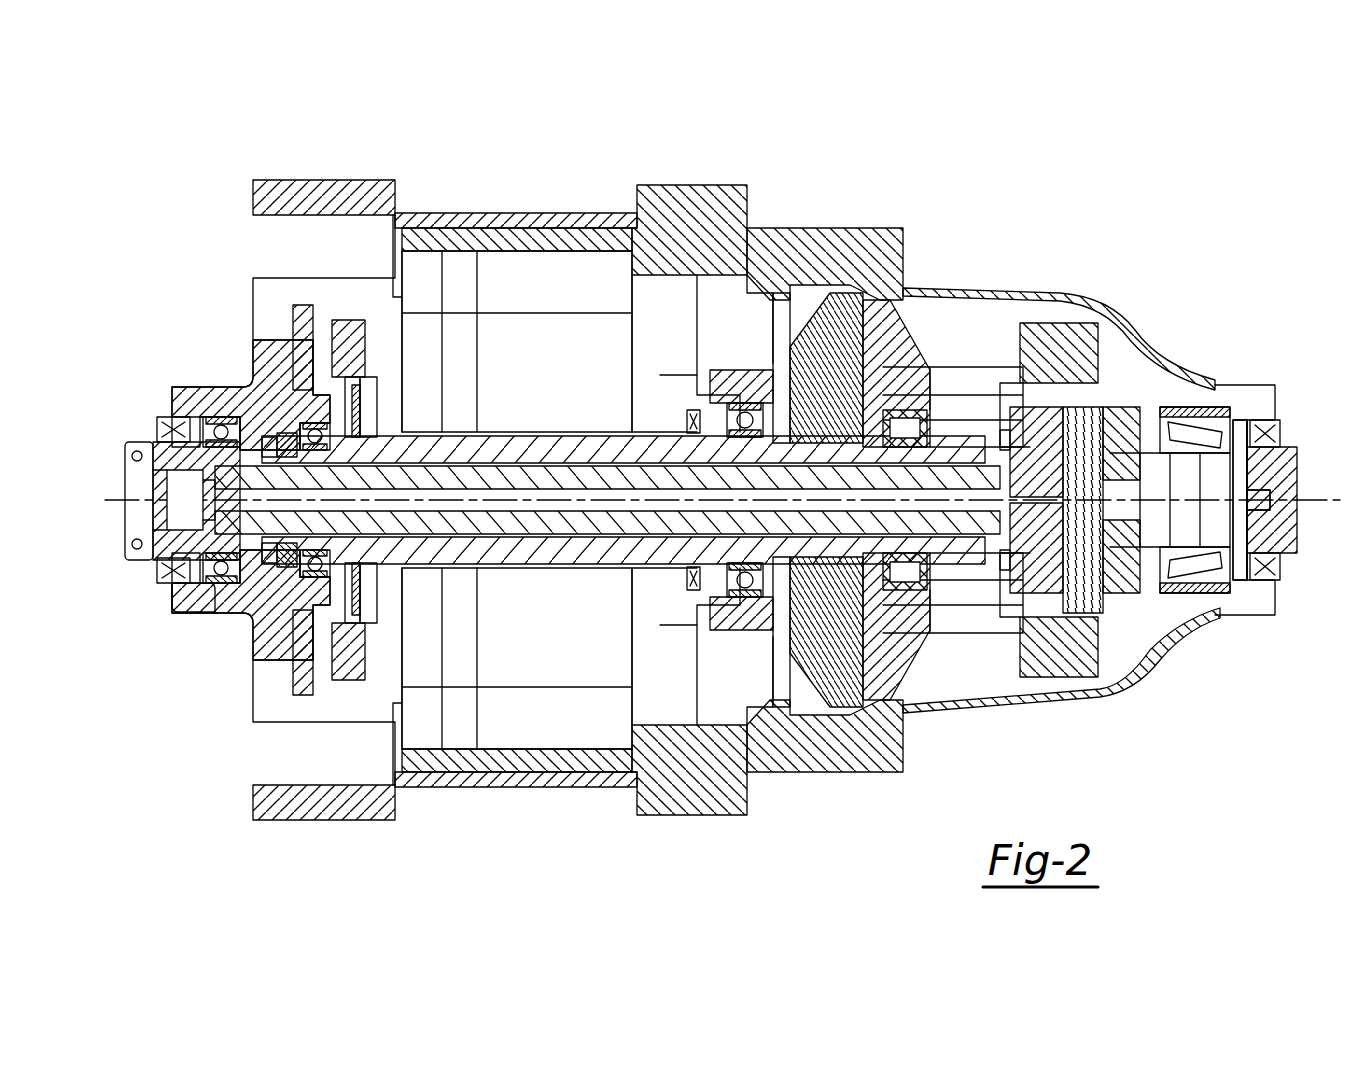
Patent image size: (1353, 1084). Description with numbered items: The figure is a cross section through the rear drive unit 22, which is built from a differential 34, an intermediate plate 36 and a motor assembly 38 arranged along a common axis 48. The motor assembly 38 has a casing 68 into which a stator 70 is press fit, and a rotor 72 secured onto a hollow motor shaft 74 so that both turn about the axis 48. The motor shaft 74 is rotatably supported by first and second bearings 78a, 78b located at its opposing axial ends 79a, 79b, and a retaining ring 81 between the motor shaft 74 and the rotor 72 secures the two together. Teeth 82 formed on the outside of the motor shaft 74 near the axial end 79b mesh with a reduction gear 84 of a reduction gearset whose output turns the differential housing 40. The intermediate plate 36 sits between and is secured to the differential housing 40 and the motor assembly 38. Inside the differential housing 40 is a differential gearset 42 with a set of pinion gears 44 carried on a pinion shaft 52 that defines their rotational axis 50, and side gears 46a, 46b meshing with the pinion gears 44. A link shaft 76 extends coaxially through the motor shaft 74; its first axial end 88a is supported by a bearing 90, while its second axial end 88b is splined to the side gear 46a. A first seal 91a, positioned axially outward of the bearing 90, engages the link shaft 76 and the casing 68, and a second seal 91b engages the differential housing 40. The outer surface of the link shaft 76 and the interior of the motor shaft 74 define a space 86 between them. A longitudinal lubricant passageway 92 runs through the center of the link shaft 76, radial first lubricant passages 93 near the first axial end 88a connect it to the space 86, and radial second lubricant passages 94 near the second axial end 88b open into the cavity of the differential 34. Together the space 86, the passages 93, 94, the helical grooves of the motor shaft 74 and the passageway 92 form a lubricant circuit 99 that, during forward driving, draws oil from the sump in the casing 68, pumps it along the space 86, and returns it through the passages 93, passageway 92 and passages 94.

The rear drive unit 22 is at (183, 165).
The differential 34 is at (1245, 385).
The intermediate plate 36 is at (868, 248).
The motor assembly 38 is at (584, 489).
The differential housing 40 is at (1030, 710).
The differential gearset 42 is at (1120, 390).
The pinion gears 44 is at (1128, 395).
The side gear 46a is at (1040, 430).
The side gear 46b is at (1130, 425).
The axis 48 is at (107, 495).
The axis 50 is at (1090, 320).
The pinion shaft 52 is at (1068, 470).
The casing 68 is at (572, 222).
The stator 70 is at (421, 725).
The rotor 72 is at (540, 665).
The motor shaft 74 is at (605, 548).
The link shaft 76 is at (418, 525).
The first bearing 78a is at (308, 445).
The second bearing 78b is at (742, 598).
The axial end 79a is at (283, 460).
The axial end 79b is at (790, 540).
The retaining ring 81 is at (660, 375).
The teeth 82 is at (835, 540).
The reduction gear 84 is at (850, 330).
The space 86 is at (468, 460).
The first axial end 88a is at (160, 450).
The second axial end 88b is at (1045, 460).
The bearing 90 is at (178, 598).
The first seal 91a is at (170, 425).
The second seal 91b is at (1275, 555).
The lubricant passageway 92 is at (490, 510).
The first lubricant passages 93 is at (258, 462).
The second lubricant passages 94 is at (985, 475).
The lubricant circuit 99 is at (552, 470).